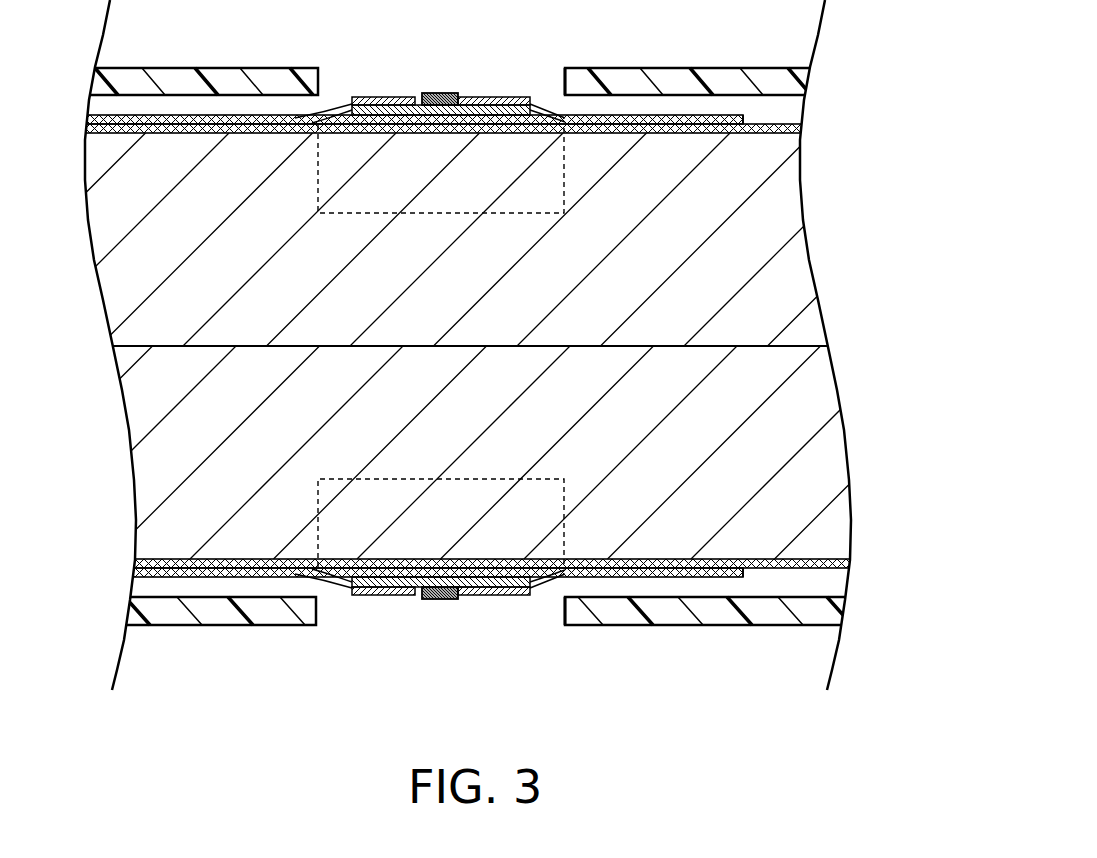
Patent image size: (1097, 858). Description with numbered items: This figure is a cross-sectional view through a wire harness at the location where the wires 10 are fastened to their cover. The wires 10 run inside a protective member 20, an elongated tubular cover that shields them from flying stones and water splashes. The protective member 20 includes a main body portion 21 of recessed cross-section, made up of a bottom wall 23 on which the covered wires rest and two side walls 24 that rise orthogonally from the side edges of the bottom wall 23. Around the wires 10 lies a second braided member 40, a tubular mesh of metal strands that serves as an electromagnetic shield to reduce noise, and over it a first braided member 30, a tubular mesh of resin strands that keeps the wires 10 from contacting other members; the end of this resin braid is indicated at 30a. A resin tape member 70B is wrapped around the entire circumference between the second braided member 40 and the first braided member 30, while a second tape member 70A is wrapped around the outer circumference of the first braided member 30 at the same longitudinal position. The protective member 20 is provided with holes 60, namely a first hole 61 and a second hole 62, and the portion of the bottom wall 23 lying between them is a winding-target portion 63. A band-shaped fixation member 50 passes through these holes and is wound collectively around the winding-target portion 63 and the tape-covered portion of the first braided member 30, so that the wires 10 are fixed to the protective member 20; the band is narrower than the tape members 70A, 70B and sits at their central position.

The wires 10 is at (812, 240).
The protective member 20 is at (551, 648).
The main body portion 21 is at (228, 626).
The bottom wall 23 is at (787, 108).
The side walls 24 is at (717, 67).
The first braided member 30 is at (237, 115).
The end of first adhesive layer 30a is at (752, 127).
The second braided member 40 is at (770, 124).
The fixation member 50 is at (437, 92).
The holes 60 is at (602, 356).
The first hole 61 is at (565, 78).
The second hole 62 is at (557, 618).
The winding-target portion 63 is at (427, 212).
The tape member 70A is at (538, 96).
The tape member 70B is at (338, 103).